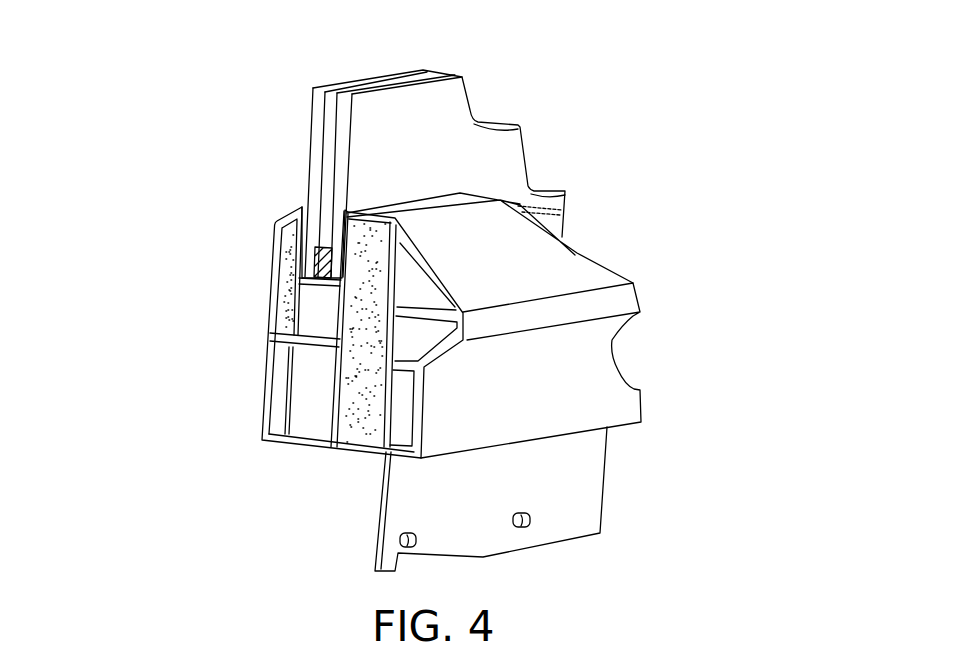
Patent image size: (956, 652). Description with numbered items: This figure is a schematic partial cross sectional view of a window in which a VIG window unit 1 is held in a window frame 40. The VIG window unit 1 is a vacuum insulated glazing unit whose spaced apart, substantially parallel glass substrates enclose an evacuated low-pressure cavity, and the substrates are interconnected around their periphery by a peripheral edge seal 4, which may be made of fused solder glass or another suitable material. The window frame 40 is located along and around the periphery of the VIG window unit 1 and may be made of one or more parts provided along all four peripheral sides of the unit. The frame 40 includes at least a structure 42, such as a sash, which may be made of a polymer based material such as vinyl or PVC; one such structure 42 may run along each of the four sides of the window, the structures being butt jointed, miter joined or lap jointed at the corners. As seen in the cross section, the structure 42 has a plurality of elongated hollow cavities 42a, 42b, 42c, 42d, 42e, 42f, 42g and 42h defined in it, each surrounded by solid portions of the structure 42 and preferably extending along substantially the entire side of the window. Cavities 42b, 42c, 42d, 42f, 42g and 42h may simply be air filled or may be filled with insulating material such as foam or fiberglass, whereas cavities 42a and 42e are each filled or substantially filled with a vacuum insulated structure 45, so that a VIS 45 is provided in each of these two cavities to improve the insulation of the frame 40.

The VIG window unit 1 is at (282, 107).
The peripheral edge seal 4 is at (330, 242).
The window frame 40 is at (184, 521).
The structure 42 is at (277, 232).
The elongated hollow cavity 42a is at (290, 245).
The elongated hollow cavity 42b is at (280, 403).
The elongated hollow cavity 42c is at (320, 307).
The elongated hollow cavity 42d is at (310, 413).
The elongated hollow cavity 42e is at (360, 418).
The elongated hollow cavity 42f is at (413, 290).
The elongated hollow cavity 42g is at (425, 338).
The elongated hollow cavity 42h is at (417, 412).
The vacuum insulated structure 45 is at (362, 372).